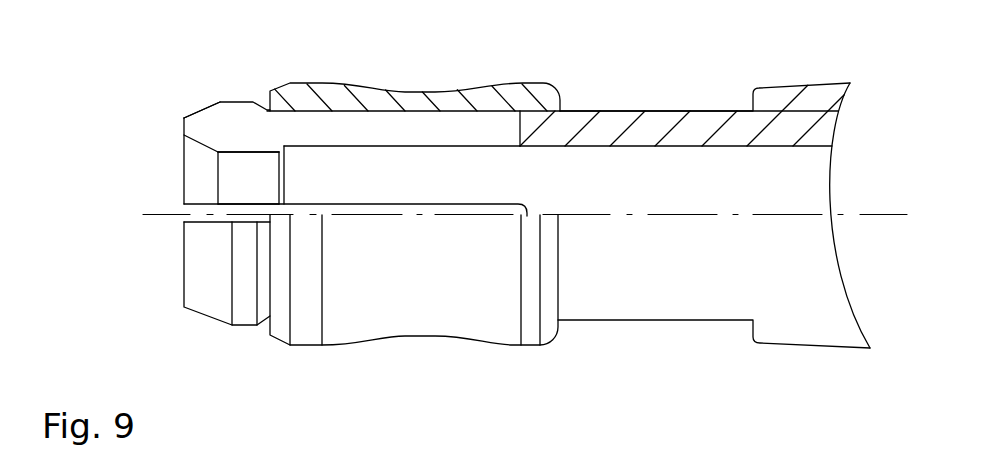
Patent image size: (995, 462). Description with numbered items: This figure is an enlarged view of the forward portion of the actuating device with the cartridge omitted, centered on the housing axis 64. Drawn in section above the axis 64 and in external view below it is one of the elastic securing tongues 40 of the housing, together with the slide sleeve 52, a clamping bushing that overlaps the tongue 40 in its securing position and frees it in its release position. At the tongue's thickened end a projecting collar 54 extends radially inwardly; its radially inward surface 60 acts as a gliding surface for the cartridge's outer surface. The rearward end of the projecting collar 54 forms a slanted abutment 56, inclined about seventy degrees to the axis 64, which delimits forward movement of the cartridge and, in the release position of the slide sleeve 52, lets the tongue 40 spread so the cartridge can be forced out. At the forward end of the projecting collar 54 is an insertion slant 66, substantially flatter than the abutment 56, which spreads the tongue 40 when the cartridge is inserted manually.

The securing tongue 40 is at (217, 123).
The slide sleeve 52 is at (533, 107).
The projecting collar 54 is at (228, 145).
The abutment 56 is at (284, 149).
The radially inward surface 60 is at (245, 185).
The axis 64 is at (668, 215).
The insertion slant 66 is at (205, 150).